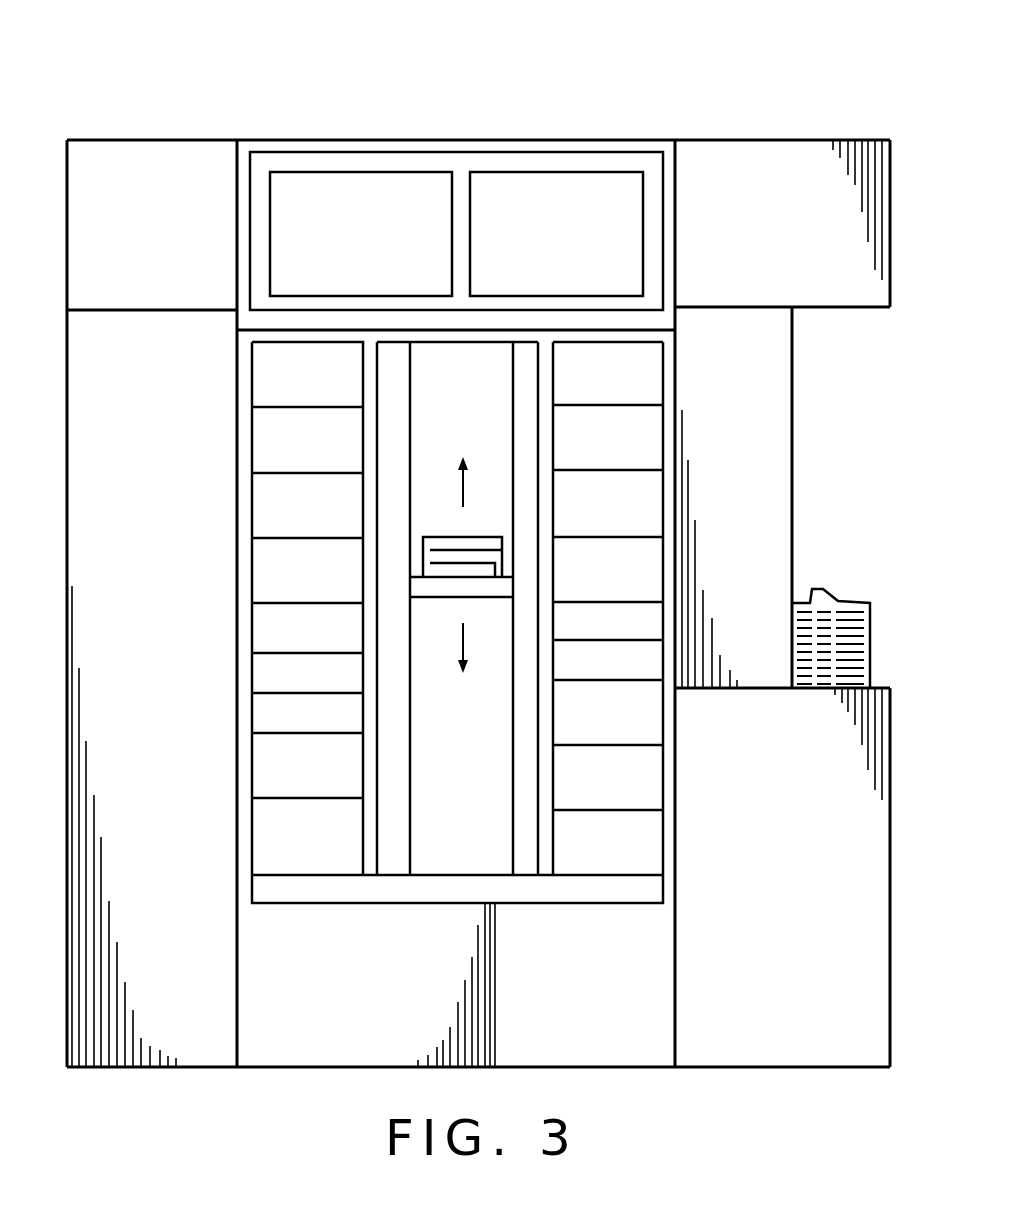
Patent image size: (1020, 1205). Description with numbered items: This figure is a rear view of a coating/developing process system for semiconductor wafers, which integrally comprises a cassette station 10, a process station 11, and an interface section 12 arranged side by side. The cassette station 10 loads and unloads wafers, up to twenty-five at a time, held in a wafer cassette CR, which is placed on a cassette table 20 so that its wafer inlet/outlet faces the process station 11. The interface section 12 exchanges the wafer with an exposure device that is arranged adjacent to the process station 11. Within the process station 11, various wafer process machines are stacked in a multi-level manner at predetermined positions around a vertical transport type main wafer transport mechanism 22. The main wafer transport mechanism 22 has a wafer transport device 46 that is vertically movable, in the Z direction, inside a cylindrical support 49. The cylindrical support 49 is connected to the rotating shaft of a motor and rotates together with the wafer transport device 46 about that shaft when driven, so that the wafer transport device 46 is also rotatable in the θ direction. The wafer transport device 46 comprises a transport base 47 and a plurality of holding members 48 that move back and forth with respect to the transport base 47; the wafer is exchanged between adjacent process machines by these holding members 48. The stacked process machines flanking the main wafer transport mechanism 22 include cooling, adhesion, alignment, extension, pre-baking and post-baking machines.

The cassette station 10 is at (781, 125).
The process station 11 is at (471, 125).
The interface section 12 is at (148, 125).
The cassette table 20 is at (882, 688).
The main wafer transport mechanism 22 is at (488, 474).
The wafer transport device 46 is at (437, 524).
The transport base 47 is at (430, 590).
The holding members 48 is at (483, 560).
The cylindrical support 49 is at (526, 866).
The wafer cassette CR is at (848, 600).